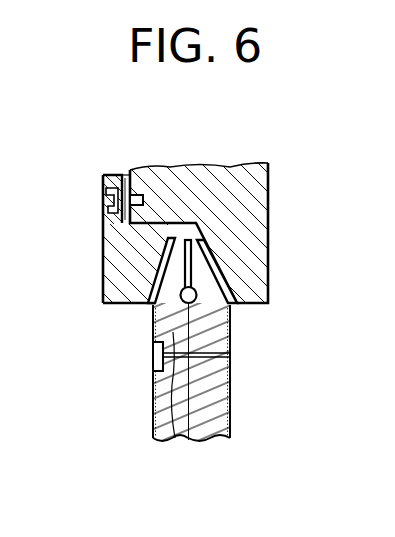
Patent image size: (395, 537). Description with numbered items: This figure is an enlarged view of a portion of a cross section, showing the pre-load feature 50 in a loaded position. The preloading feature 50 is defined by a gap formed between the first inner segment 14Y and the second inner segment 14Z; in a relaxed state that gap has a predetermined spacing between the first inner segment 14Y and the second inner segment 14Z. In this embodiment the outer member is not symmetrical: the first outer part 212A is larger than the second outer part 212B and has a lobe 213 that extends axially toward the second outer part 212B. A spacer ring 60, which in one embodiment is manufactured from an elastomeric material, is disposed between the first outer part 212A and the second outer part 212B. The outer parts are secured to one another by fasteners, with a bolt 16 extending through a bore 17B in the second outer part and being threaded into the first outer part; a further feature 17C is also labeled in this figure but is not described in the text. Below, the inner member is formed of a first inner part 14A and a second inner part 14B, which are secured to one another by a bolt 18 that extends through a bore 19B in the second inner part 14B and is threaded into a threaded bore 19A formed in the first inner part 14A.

The bolt 16 is at (102, 199).
The bore 17B is at (116, 186).
The hook tab 17C is at (140, 174).
The spacer ring 60 is at (126, 178).
The lobe 213 is at (197, 197).
The first outer part 212A is at (250, 203).
The second outer part 212B is at (108, 265).
The preloading feature 50 is at (195, 282).
The first inner segment 14Y is at (167, 323).
The second inner segment 14Z is at (220, 328).
The first inner part 14A is at (162, 426).
The second inner part 14B is at (217, 415).
The bolt 18 is at (153, 372).
The bore 19B is at (214, 360).
The threaded bore 19A is at (175, 440).